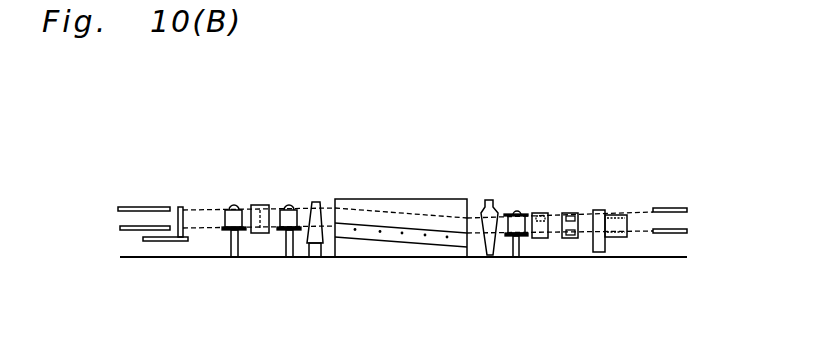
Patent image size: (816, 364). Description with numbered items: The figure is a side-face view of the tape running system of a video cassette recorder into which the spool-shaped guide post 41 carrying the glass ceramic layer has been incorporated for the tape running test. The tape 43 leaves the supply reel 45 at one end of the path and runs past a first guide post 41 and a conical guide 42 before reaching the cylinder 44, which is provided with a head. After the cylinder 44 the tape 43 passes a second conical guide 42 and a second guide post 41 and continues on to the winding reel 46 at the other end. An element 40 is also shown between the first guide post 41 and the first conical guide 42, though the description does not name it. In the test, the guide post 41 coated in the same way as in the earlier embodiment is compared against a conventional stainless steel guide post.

The optical element 40 is at (277, 205).
The guide post 41 is at (228, 207).
The conical guide 42 is at (313, 201).
The tape 43 is at (203, 222).
The cylinder provided with a head 44 is at (393, 199).
The supply reel 45 is at (137, 205).
The winding reel 46 is at (665, 207).